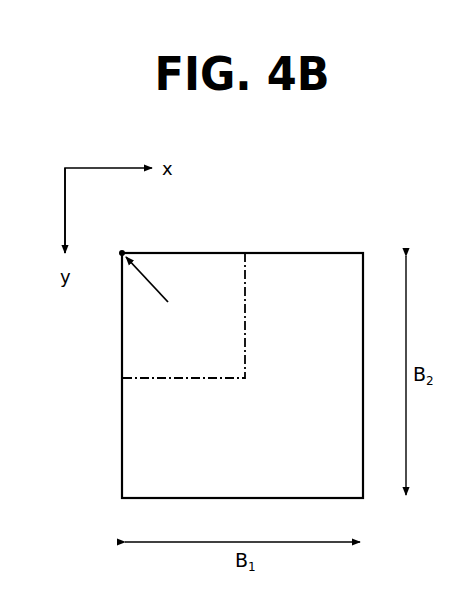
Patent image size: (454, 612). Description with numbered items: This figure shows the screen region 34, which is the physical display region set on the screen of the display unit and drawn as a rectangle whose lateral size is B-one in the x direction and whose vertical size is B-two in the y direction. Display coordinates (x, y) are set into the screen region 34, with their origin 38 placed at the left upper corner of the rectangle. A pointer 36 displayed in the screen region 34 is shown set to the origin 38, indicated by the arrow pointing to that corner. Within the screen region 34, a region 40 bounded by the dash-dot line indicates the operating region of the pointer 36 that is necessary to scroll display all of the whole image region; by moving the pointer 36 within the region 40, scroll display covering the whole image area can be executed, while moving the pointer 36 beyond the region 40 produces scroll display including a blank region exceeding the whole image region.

The screen region 34 is at (305, 250).
The pointer 36 is at (157, 287).
The origin 38 is at (121, 250).
The region 40 is at (202, 382).